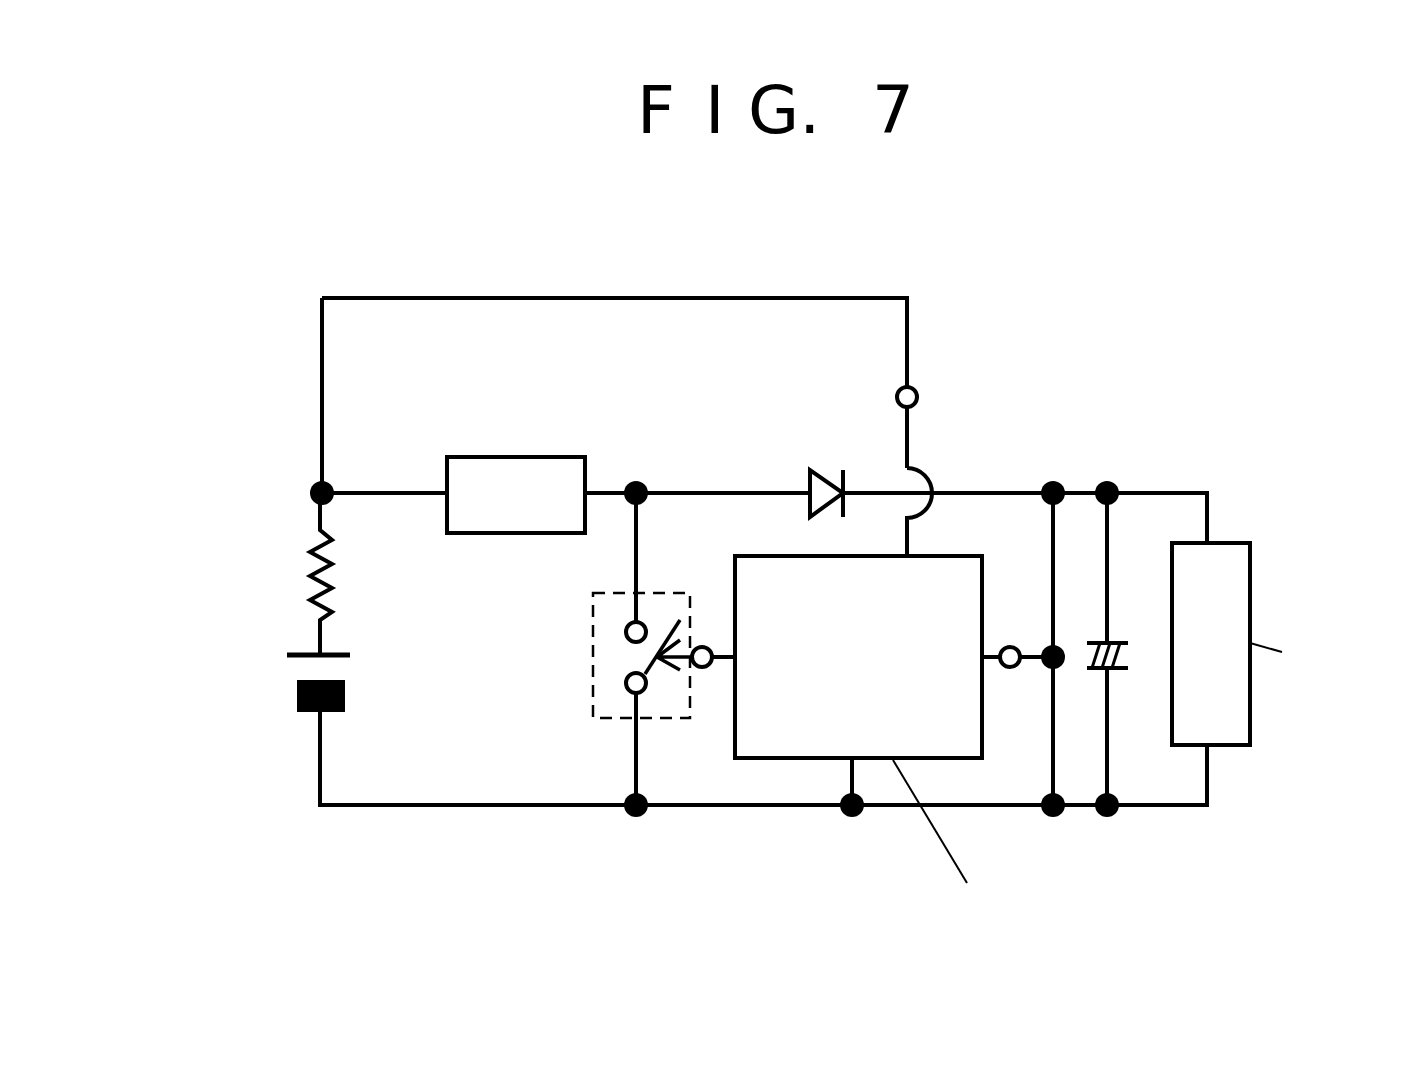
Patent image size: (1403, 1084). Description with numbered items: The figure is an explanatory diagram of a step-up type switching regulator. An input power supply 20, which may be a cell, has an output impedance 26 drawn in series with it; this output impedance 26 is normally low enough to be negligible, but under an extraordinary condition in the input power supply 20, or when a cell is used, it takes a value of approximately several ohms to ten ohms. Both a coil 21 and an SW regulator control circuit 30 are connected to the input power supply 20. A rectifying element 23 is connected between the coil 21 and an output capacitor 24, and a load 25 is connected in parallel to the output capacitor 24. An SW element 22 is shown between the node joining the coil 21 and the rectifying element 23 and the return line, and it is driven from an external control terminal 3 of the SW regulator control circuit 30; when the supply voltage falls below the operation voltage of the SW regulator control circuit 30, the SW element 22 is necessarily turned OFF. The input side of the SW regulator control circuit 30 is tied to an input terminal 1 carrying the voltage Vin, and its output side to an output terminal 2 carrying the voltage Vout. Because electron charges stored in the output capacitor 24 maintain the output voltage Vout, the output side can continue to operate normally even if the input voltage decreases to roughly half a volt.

The input terminal 1 is at (927, 383).
The output terminal 2 is at (1010, 680).
The external control terminal 3 is at (699, 630).
The input power supply 20 is at (288, 670).
The coil 21 is at (502, 445).
The SW element 22 is at (590, 655).
The rectifying element 23 is at (812, 458).
The output capacitor 24 is at (1118, 617).
The load 25 is at (1238, 533).
The output impedance 26 is at (300, 582).
The SW regulator control circuit 30 is at (820, 768).